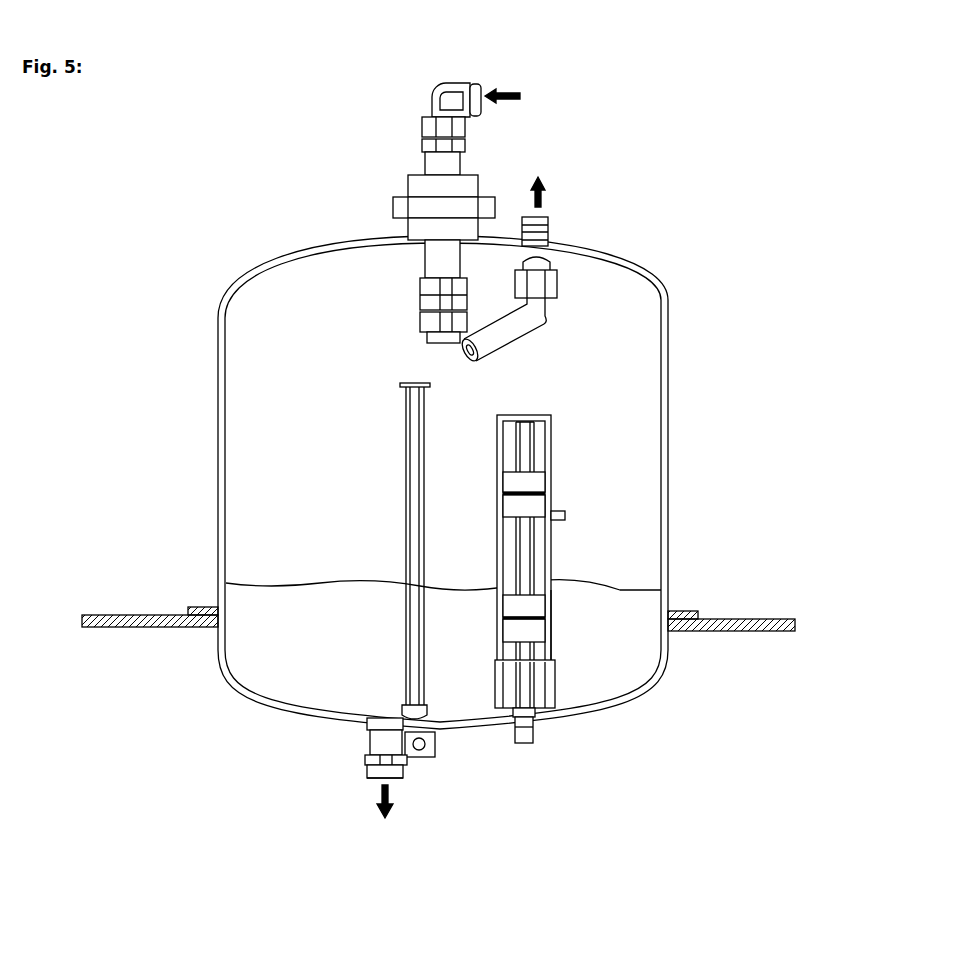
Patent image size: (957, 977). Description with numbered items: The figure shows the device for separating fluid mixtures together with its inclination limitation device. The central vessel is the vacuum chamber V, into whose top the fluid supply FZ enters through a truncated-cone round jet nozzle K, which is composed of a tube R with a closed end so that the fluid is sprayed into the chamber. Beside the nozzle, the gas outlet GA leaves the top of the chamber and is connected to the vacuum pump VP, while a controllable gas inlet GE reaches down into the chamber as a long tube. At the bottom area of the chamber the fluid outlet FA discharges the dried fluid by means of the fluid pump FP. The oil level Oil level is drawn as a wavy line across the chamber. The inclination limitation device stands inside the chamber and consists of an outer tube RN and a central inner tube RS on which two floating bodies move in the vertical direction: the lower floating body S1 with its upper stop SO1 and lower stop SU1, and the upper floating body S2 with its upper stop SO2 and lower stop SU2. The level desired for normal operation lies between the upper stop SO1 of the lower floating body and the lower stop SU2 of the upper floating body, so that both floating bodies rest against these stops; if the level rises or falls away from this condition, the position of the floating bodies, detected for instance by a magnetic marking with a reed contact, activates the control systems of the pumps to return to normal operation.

The vacuum chamber V is at (226, 297).
The oil level Oil level is at (361, 570).
The tube R is at (466, 77).
The fluid supply FZ is at (523, 96).
The gas outlet GA is at (535, 194).
The vacuum pump VP is at (833, 176).
The truncated-cone round jet nozzle K is at (416, 284).
The gas inlet GE is at (404, 466).
The inner tube of the inclination limitation device RS is at (546, 415).
The upper stop of the upper floating body SO2 is at (538, 430).
The upper floating body S2 is at (549, 477).
The lower stop of the upper floating body SU2 is at (534, 513).
The outer tube of the inclination limitation device RN is at (553, 605).
The upper stop of the lower floating body SO1 is at (553, 620).
The lower floating body S1 is at (553, 640).
The lower stop of the lower floating body SU1 is at (541, 687).
The fluid outlet FA is at (386, 787).
The fluid pump FP is at (663, 852).